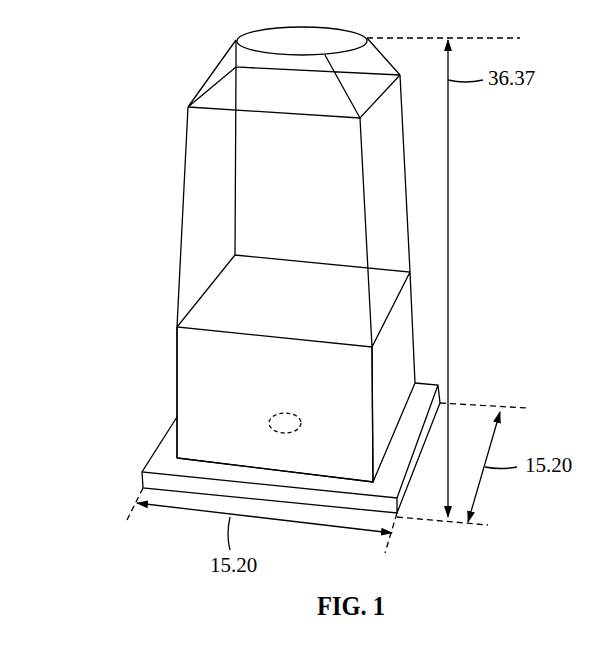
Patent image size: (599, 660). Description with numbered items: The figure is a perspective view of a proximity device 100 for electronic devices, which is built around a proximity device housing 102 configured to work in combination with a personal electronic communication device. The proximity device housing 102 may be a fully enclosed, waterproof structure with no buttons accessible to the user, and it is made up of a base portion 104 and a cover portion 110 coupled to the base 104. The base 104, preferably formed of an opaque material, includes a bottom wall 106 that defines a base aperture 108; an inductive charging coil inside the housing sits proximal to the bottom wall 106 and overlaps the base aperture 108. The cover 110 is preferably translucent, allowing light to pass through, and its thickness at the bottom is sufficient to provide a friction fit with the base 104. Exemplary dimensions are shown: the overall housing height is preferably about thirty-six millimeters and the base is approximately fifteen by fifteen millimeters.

The proximity device 100 is at (230, 270).
The proximity device housing 102 is at (165, 272).
The base portion 104 is at (200, 398).
The bottom wall 106 is at (170, 463).
The base aperture 108 is at (273, 422).
The cover portion 110 is at (210, 207).